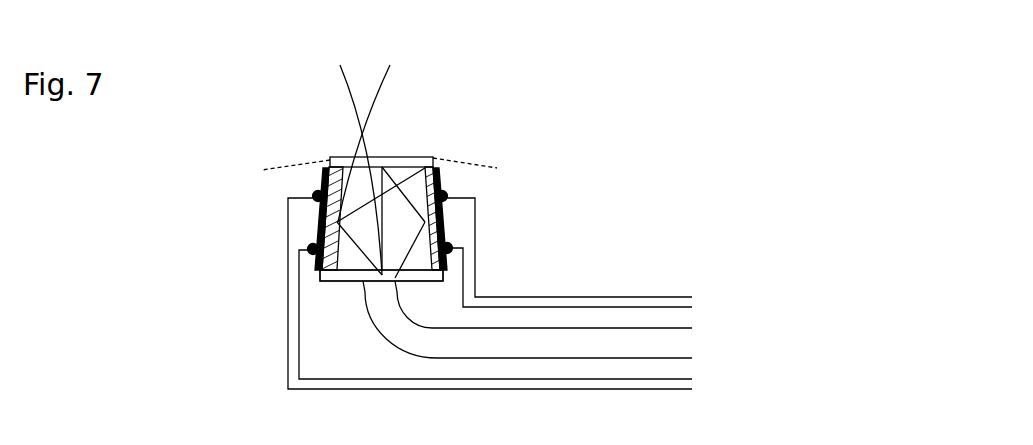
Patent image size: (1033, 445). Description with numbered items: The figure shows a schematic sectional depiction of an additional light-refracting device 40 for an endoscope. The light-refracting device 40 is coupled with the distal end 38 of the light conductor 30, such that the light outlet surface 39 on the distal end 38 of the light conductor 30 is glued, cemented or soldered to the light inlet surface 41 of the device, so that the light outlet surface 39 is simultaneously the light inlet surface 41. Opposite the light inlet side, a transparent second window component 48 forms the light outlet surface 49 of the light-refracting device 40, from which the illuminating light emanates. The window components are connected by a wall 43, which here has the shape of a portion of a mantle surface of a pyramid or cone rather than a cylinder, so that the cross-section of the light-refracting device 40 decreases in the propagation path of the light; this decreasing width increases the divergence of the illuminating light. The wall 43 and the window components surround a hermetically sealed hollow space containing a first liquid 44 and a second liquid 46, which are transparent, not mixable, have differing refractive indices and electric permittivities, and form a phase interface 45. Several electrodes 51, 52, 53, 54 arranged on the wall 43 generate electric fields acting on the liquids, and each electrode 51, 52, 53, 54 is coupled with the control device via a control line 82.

The light conductor 30 is at (613, 330).
The distal end 38 is at (382, 287).
The light outlet surface 39 is at (365, 270).
The light-refracting device 40 is at (419, 192).
The light inlet surface 41 is at (365, 270).
The wall 43 is at (435, 167).
The first liquid 44 is at (335, 260).
The phase interface 45 is at (357, 203).
The second liquid 46 is at (345, 170).
The second window component 48 is at (332, 158).
The light outlet surface 49 is at (352, 153).
The electrode 51 is at (323, 181).
The electrode 52 is at (315, 230).
The electrode 53 is at (447, 236).
The electrode 54 is at (440, 178).
The control line 82 is at (562, 295).